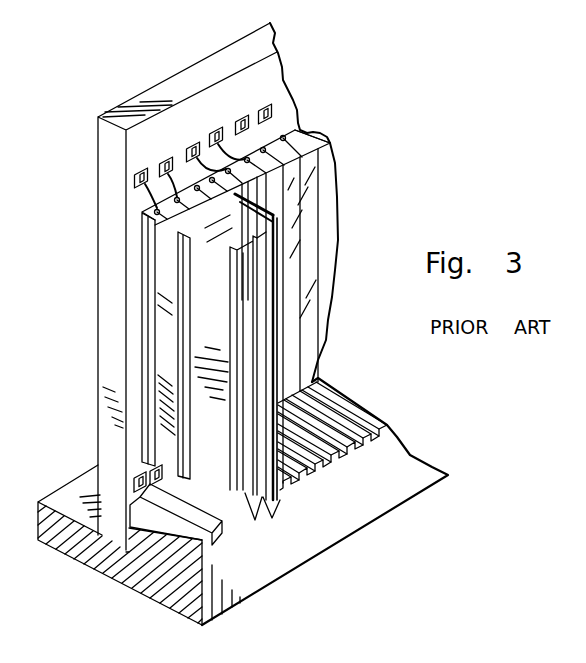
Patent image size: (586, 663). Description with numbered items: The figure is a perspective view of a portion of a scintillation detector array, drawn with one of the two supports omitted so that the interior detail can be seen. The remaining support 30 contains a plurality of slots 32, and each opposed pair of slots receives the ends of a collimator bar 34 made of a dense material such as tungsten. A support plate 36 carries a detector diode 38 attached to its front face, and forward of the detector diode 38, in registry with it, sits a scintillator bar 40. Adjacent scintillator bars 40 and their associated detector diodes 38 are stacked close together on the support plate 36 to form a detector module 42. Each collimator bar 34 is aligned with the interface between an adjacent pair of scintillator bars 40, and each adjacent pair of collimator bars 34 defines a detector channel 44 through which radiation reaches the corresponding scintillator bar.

The support 30 is at (262, 570).
The slots 32 is at (352, 437).
The collimator bar 34 is at (205, 338).
The support plate 36 is at (200, 72).
The detector diode 38 is at (150, 210).
The scintillator bar 40 is at (176, 418).
The detector module 42 is at (327, 127).
The detector channel 44 is at (257, 516).